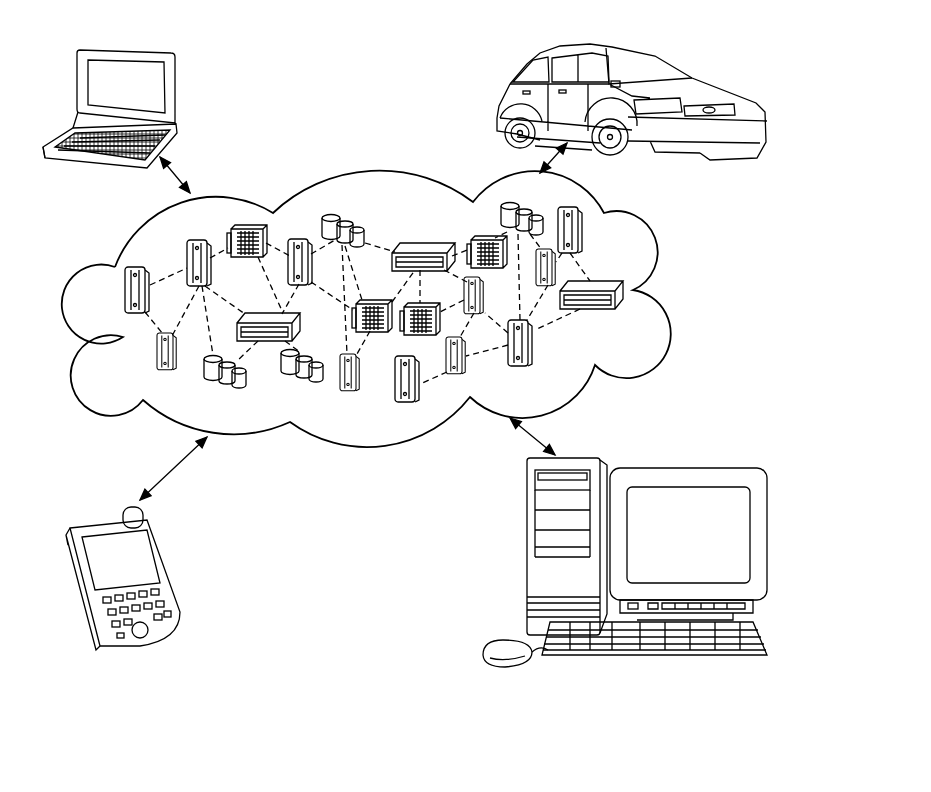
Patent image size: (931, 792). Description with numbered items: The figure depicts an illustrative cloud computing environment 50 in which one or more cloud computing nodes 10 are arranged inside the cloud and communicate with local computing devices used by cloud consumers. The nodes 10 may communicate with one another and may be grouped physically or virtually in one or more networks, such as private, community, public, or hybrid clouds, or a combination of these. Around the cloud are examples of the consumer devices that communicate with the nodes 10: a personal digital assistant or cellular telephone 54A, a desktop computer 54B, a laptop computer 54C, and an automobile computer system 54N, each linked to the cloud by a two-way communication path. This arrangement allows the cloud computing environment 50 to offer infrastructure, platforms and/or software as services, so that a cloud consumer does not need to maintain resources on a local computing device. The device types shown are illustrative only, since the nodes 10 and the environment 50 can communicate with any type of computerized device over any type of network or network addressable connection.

The cloud computing nodes 10 is at (637, 310).
The cloud computing environment 50 is at (661, 261).
The personal digital assistant or cellular telephone 54A is at (167, 567).
The desktop computer 54B is at (527, 553).
The laptop computer 54C is at (173, 91).
The automobile computer system 54N is at (507, 95).